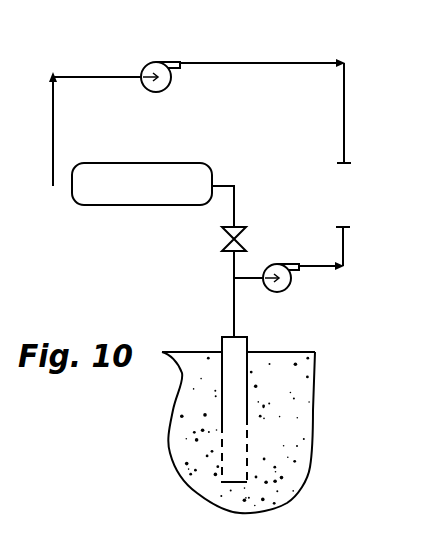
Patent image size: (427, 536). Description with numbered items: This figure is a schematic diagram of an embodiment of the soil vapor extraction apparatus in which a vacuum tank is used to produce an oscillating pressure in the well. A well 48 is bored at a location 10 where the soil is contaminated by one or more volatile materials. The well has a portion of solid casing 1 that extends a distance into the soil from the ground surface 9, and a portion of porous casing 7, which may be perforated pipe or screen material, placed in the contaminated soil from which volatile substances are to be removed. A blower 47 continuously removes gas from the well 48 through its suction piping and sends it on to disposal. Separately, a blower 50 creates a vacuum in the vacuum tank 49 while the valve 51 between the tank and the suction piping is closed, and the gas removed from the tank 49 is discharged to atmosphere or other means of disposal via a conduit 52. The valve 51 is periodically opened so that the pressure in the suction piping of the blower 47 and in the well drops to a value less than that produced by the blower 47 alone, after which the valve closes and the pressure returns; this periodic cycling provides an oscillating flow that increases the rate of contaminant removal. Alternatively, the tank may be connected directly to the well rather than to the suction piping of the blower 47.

The solid casing 1 is at (222, 398).
The porous casing 7 is at (250, 453).
The ground surface 9 is at (282, 351).
The location 10 is at (290, 387).
The blower 47 is at (290, 289).
The well 48 is at (220, 332).
The vacuum tank 49 is at (196, 163).
The blower 50 is at (162, 61).
The valve 51 is at (245, 243).
The conduit 52 is at (275, 60).